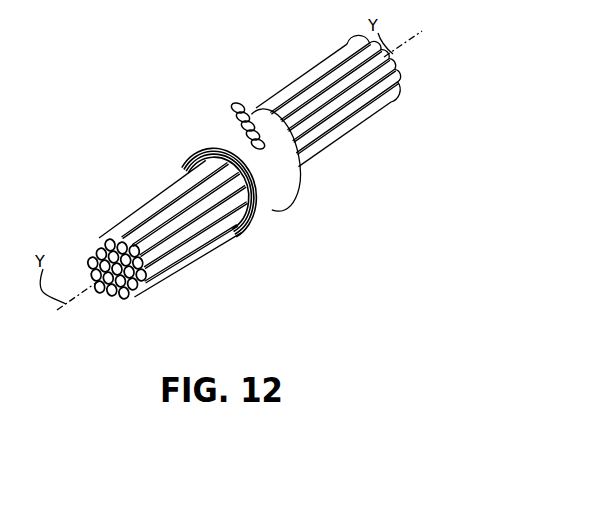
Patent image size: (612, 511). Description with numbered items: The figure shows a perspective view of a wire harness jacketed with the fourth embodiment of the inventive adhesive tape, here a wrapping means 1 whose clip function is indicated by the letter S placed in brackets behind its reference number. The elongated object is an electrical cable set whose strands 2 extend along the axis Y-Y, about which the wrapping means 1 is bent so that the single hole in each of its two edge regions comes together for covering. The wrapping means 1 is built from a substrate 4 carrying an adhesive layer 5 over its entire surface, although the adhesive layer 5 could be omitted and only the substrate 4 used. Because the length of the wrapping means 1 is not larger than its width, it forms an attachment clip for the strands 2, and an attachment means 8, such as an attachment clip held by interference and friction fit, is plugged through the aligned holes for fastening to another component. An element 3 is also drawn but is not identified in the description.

The adhesive tape (wrapping means) 1 is at (221, 117).
The strands 2 is at (186, 226).
The sheath cover 3 is at (264, 212).
The substrate 4 is at (180, 165).
The adhesive layer 5 is at (172, 166).
The attachment means 8 is at (242, 108).